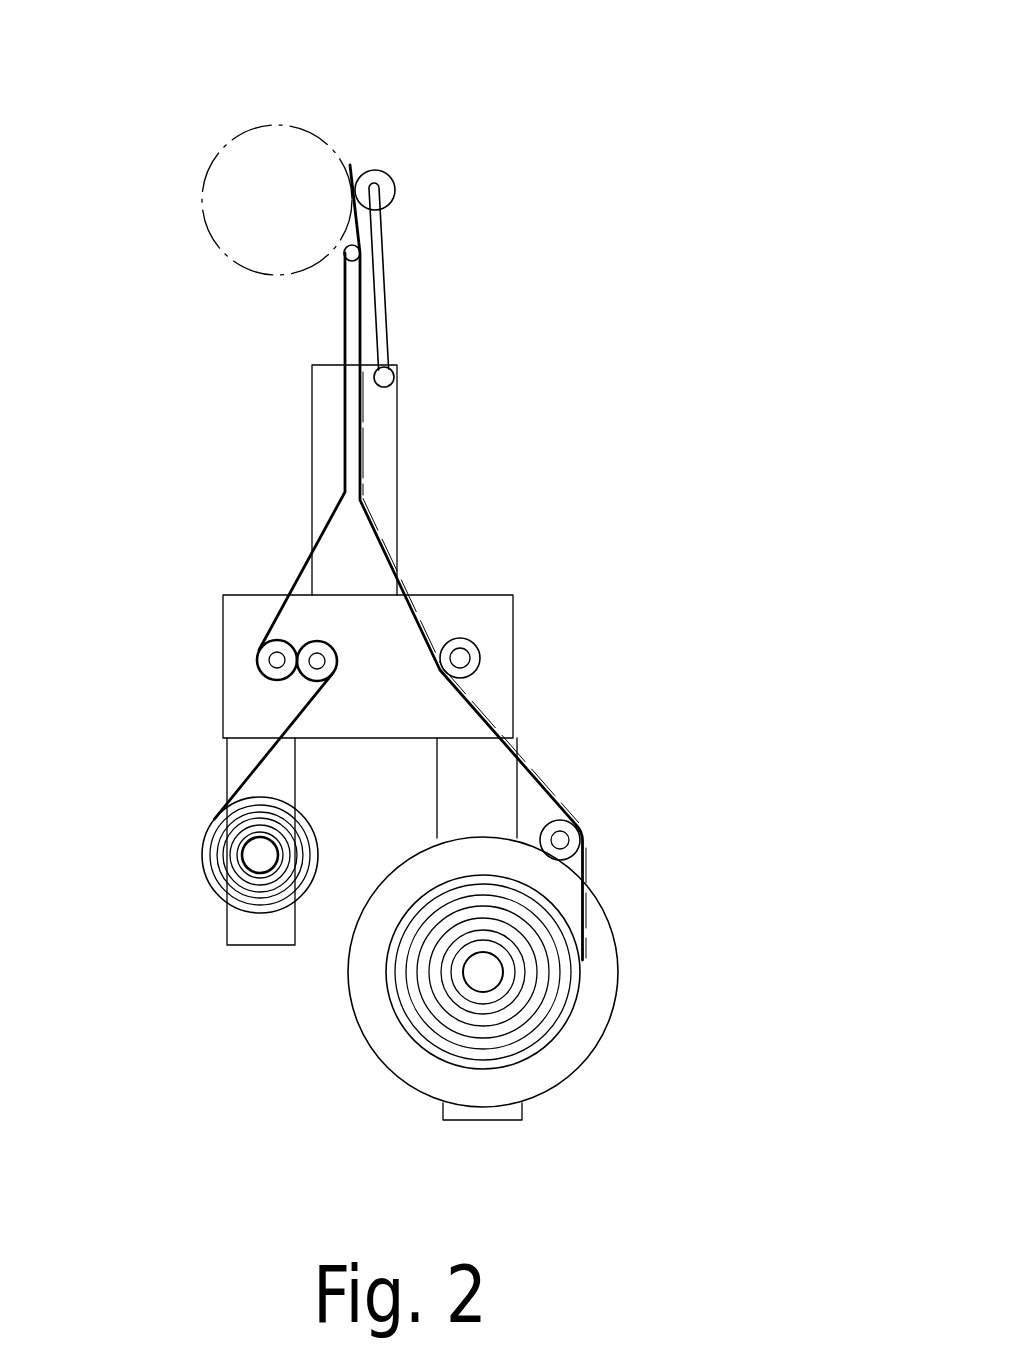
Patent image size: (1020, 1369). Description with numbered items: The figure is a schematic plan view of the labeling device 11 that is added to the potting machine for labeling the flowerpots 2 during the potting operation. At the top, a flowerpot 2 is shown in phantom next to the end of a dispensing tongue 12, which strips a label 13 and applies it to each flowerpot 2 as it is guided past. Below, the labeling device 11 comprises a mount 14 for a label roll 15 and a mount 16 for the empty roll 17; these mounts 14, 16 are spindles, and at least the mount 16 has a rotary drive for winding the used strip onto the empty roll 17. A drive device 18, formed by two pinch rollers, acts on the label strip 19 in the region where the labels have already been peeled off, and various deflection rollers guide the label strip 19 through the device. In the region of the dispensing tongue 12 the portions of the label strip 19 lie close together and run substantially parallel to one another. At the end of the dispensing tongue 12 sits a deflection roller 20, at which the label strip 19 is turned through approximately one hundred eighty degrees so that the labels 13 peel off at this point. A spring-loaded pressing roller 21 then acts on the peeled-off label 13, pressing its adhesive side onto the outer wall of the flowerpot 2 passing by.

The flowerpot 2 is at (322, 140).
The labeling device 11 is at (650, 219).
The dispensing tongue 12 is at (383, 257).
The label 13 is at (358, 232).
The mount for label roll 14 is at (482, 982).
The label roll 15 is at (547, 972).
The mount for empty roll 16 is at (258, 855).
The empty roll 17 is at (227, 840).
The drive device 18 is at (237, 694).
The label strip 19 is at (295, 582).
The deflection roller 20 is at (344, 256).
The pressing roller 21 is at (387, 192).